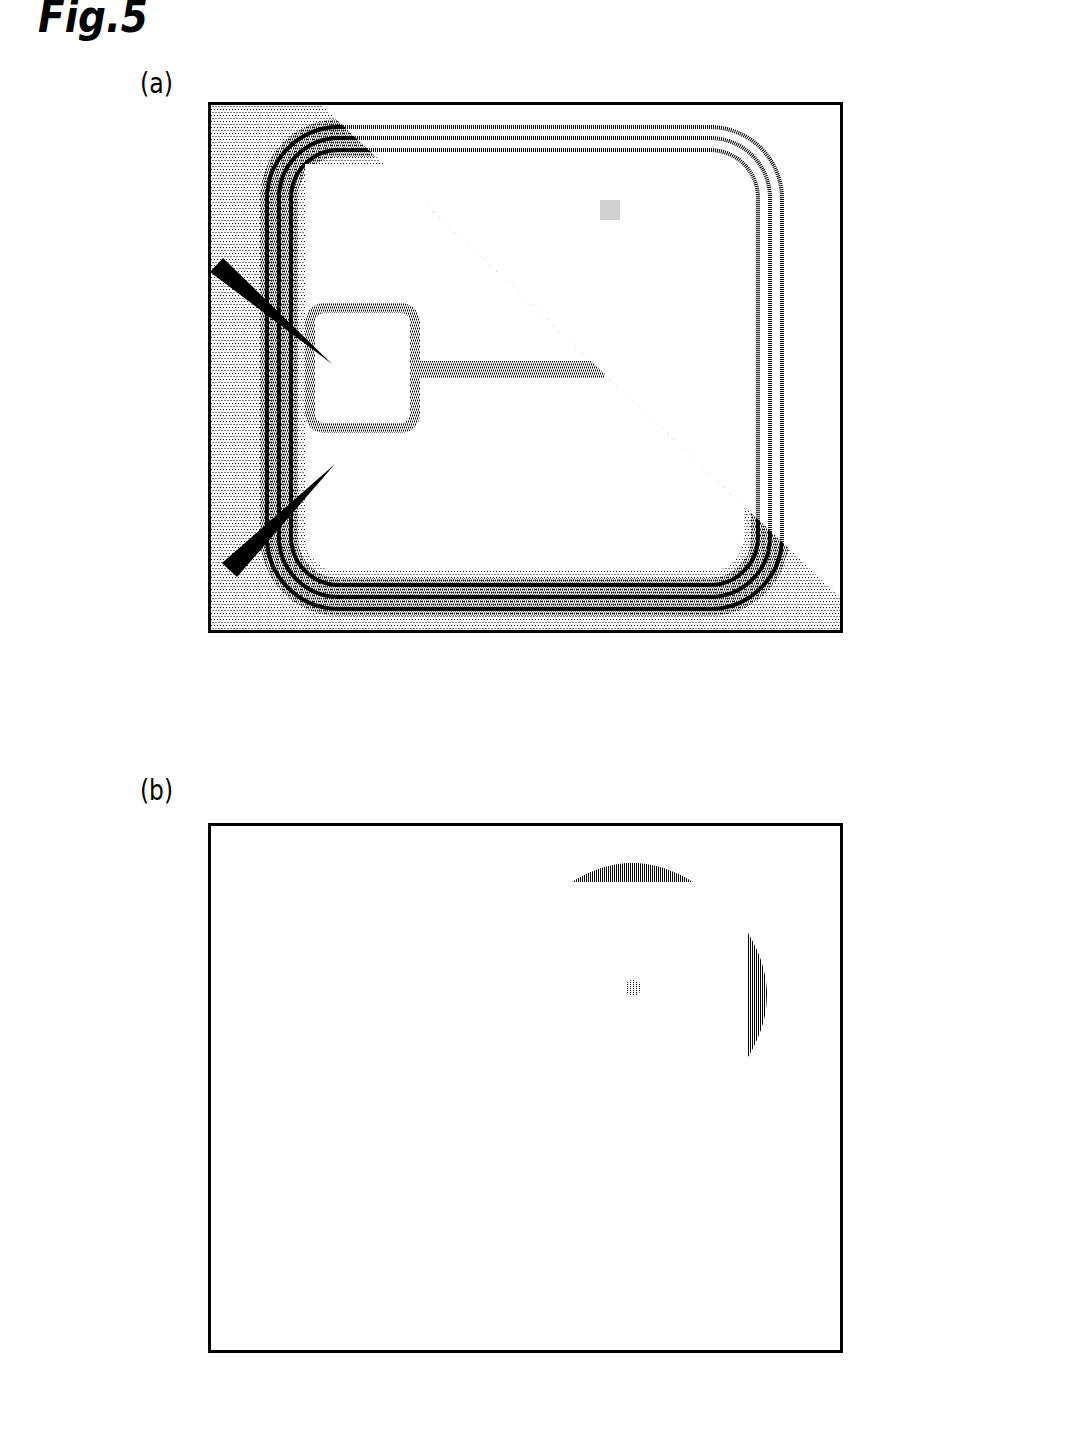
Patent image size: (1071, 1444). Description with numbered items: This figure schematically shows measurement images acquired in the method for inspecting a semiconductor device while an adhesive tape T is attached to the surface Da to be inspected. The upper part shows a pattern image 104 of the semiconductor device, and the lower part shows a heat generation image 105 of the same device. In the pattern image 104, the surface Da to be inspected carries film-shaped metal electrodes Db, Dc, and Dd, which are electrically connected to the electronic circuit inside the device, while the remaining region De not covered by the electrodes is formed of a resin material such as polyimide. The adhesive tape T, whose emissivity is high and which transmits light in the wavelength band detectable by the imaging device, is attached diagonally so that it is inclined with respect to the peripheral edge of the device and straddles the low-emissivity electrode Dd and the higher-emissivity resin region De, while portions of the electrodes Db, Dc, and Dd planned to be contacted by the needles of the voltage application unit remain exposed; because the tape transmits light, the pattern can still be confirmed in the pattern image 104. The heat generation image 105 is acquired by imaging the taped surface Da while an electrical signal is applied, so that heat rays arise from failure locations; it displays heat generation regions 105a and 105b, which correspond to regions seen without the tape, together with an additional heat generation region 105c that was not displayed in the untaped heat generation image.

The surface to be inspected Da is at (245, 135).
The electrode Db is at (480, 528).
The electrode Dc is at (330, 383).
The electrode Dd is at (347, 210).
The region of resin material De is at (337, 573).
The adhesive tape T is at (815, 572).
The pattern image 104 is at (676, 101).
The heat generation image 105 is at (710, 818).
The heat generation region 105a is at (770, 985).
The heat generation region 105b is at (641, 862).
The heat generation region 105c is at (634, 1000).